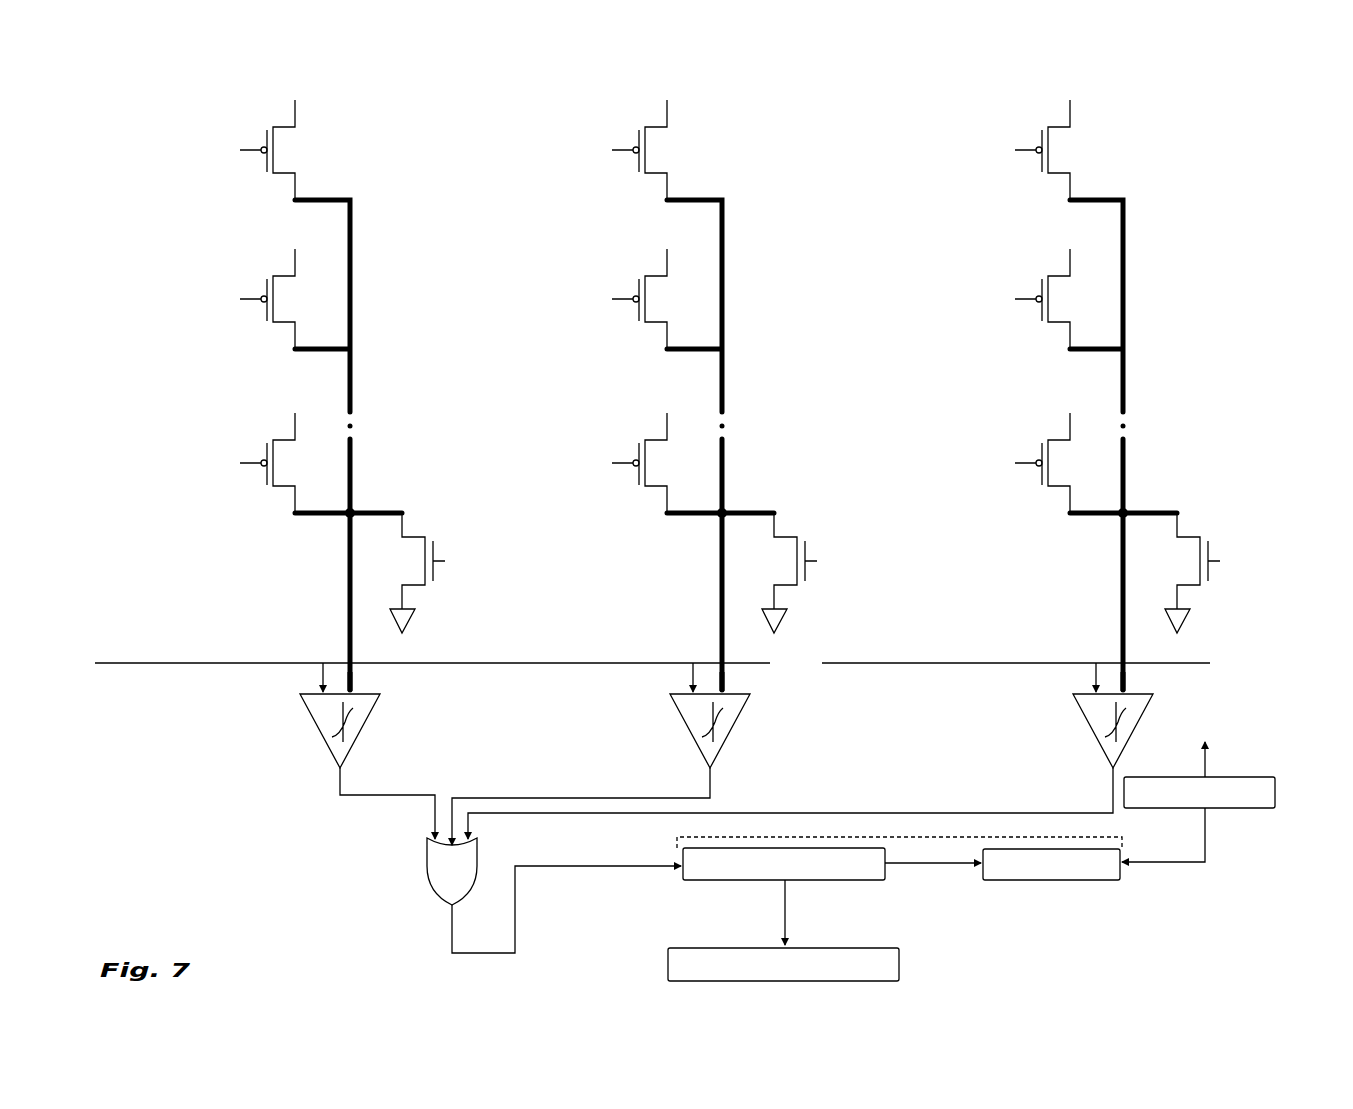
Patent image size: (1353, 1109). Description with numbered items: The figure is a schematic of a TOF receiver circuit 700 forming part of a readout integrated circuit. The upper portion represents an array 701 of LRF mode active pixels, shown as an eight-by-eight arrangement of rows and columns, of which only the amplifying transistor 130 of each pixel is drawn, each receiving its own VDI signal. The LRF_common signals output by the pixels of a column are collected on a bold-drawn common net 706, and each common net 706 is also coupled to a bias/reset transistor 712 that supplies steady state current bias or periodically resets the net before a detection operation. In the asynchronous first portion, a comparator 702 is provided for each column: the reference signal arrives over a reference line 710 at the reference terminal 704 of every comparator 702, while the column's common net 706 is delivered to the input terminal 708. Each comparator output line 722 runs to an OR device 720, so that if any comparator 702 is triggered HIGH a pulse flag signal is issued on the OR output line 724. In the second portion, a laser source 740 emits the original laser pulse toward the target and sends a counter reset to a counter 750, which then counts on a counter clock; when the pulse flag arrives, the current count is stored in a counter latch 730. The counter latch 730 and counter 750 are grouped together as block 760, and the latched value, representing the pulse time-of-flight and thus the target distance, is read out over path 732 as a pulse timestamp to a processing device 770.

The TOF receiver circuit 700 is at (138, 89).
The pixel array 701 is at (1268, 190).
The amplifying transistor 130 is at (333, 143).
The comparator 702 is at (320, 740).
The reference terminal 704 is at (320, 688).
The common net 706 is at (348, 645).
The input terminal 708 is at (356, 690).
The reference line 710 is at (246, 662).
The bias/reset transistor 712 is at (410, 568).
The OR device 720 is at (430, 860).
The comparator output line 722 is at (378, 798).
The OR output line 724 is at (516, 903).
The counter latch 730 is at (686, 881).
The pulse timestamp output 732 is at (783, 901).
The laser source 740 is at (1238, 810).
The counter 750 is at (1088, 882).
The timing circuit 760 is at (900, 836).
The processing device 770 is at (665, 962).